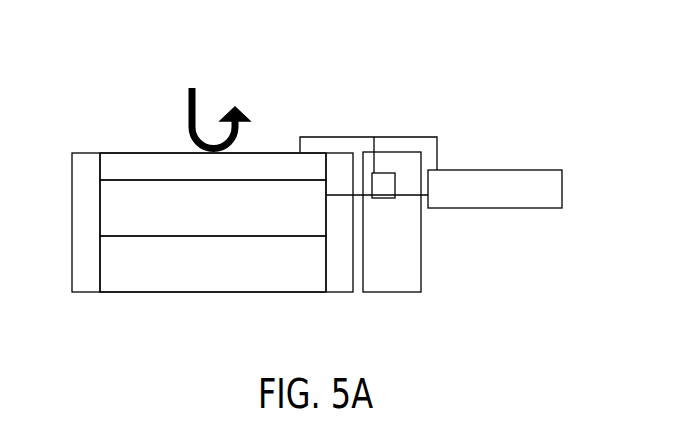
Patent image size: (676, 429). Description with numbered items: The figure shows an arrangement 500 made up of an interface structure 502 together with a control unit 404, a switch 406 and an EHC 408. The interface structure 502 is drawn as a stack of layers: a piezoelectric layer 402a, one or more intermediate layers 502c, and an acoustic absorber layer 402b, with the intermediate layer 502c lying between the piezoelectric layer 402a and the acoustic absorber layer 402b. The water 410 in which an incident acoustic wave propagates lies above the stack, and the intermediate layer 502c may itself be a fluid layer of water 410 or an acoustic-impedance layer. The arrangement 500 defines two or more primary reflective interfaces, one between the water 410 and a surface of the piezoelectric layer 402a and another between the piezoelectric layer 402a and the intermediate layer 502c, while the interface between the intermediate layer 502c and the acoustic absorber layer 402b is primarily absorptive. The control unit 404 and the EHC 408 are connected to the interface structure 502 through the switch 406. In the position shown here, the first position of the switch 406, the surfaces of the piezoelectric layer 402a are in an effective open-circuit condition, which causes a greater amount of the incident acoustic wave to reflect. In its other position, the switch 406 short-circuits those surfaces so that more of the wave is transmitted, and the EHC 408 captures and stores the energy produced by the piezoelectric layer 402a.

The arrangement 500 is at (291, 177).
The water 410 is at (137, 130).
The interface structure 502 is at (68, 152).
The piezoelectric layer 402a is at (146, 176).
The intermediate layer 502c is at (146, 216).
The acoustic absorber layer 402b is at (146, 274).
The control unit 404 is at (412, 248).
The switch 406 is at (407, 147).
The EHC 408 is at (495, 175).